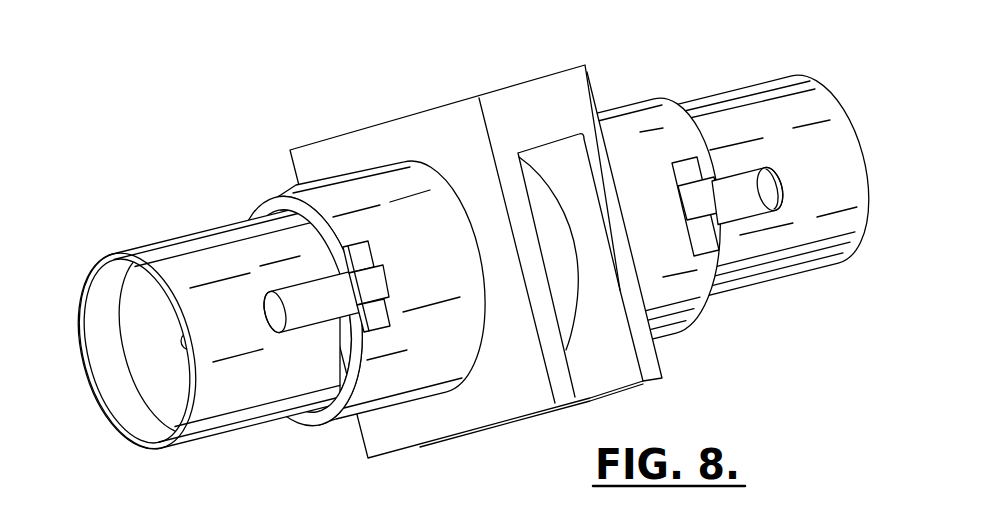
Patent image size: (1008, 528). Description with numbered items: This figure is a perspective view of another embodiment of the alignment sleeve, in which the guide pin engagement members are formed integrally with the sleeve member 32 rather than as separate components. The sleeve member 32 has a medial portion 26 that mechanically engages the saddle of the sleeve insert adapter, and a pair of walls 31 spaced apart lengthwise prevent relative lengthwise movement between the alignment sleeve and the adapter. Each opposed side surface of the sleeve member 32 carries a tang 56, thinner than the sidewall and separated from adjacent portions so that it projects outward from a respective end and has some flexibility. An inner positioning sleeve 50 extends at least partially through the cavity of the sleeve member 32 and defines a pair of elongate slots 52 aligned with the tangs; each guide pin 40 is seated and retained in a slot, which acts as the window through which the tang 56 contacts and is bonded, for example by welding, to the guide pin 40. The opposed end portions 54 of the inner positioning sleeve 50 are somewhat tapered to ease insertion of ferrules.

The medial portion 26 is at (553, 98).
The walls 31 is at (650, 363).
The sleeve member 32 is at (637, 105).
The guide pins 40 is at (752, 198).
The inner positioning sleeve 50 is at (752, 92).
The elongate slots 52 is at (778, 211).
The end portions 54 is at (110, 288).
The tang 56 is at (357, 286).